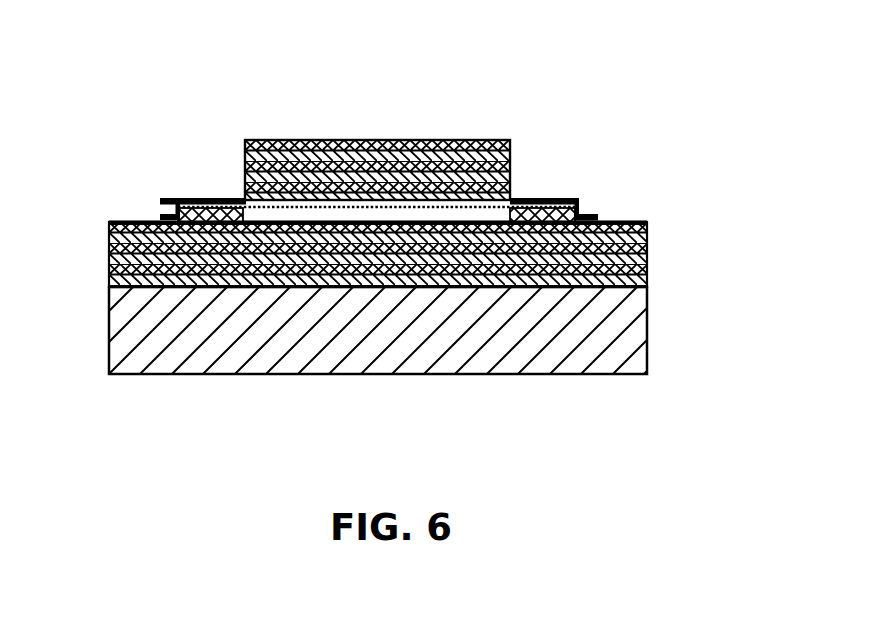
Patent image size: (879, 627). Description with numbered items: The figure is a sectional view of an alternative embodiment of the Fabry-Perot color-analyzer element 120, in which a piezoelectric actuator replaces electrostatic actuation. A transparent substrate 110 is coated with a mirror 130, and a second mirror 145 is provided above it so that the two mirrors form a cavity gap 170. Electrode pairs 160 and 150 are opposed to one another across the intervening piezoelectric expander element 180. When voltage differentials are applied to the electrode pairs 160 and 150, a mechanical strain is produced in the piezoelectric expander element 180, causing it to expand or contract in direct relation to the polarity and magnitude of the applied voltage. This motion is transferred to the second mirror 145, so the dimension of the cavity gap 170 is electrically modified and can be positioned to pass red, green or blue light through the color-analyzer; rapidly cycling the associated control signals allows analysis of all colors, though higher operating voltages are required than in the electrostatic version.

The transparent substrate 110 is at (582, 372).
The color-analyzer element 120 is at (140, 462).
The mirror 130 is at (648, 262).
The second mirror 145 is at (293, 138).
The electrode pair 150 is at (578, 200).
The electrode pair 160 is at (547, 198).
The cavity gap 170 is at (328, 212).
The piezoelectric expander element 180 is at (208, 197).